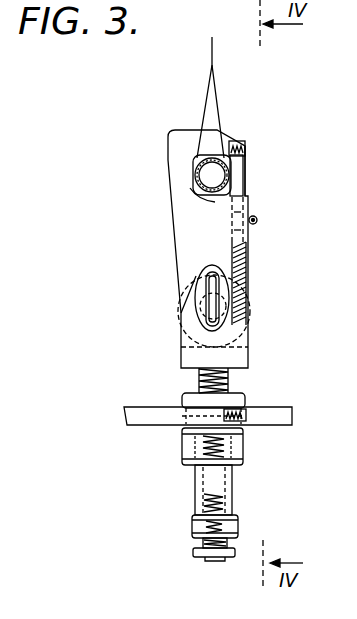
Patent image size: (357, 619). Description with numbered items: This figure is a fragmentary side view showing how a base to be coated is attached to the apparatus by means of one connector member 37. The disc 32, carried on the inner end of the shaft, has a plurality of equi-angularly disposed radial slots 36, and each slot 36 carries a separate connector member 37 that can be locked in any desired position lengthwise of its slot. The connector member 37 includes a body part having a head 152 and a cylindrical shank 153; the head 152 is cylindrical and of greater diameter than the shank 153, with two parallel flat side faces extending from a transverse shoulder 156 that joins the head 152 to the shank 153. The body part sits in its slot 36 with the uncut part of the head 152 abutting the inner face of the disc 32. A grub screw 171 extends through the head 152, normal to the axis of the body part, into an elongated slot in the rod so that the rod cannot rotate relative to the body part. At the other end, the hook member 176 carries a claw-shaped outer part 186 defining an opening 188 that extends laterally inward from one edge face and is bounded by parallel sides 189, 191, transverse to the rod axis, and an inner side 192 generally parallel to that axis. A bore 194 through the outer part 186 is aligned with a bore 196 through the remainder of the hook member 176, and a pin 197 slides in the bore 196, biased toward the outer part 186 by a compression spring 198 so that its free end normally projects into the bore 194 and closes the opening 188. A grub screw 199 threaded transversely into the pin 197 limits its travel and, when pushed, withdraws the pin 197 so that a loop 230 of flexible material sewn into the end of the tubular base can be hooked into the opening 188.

The disc 32 is at (264, 426).
The radial slot 36 is at (132, 407).
The connector member 37 is at (160, 243).
The head 152 is at (240, 393).
The cylindrical shank 153 is at (233, 490).
The transverse shoulder 156 is at (186, 427).
The grub screw 171 is at (243, 412).
The hook member 176 is at (178, 273).
The claw-shaped outer part 186 is at (218, 140).
The opening 188 is at (256, 162).
The parallel side 189 is at (225, 135).
The parallel side 191 is at (204, 198).
The inner side 192 is at (194, 178).
The bore 194 is at (243, 139).
The bore 196 is at (245, 202).
The pin 197 is at (239, 182).
The compression spring 198 is at (250, 276).
The grub screw 199 is at (258, 224).
The loop 230 is at (199, 157).